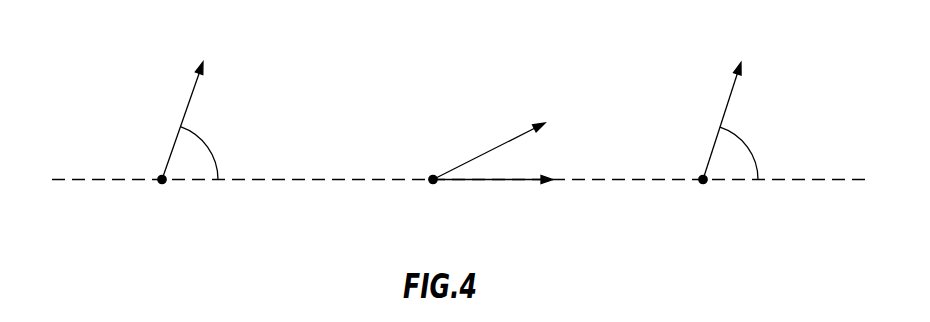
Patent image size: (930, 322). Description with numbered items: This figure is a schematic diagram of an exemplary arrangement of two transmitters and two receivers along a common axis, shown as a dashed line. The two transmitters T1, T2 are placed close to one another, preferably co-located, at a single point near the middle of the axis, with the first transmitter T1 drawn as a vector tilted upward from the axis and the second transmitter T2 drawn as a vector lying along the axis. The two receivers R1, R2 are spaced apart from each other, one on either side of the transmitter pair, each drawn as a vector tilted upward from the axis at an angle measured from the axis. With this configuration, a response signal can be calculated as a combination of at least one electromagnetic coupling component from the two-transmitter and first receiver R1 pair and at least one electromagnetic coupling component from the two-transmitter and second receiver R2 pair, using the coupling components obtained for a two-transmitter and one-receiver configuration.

The first receiver R1 is at (191, 109).
The first transmitter T1 is at (505, 145).
The second transmitter T2 is at (493, 193).
The second receiver R2 is at (732, 109).